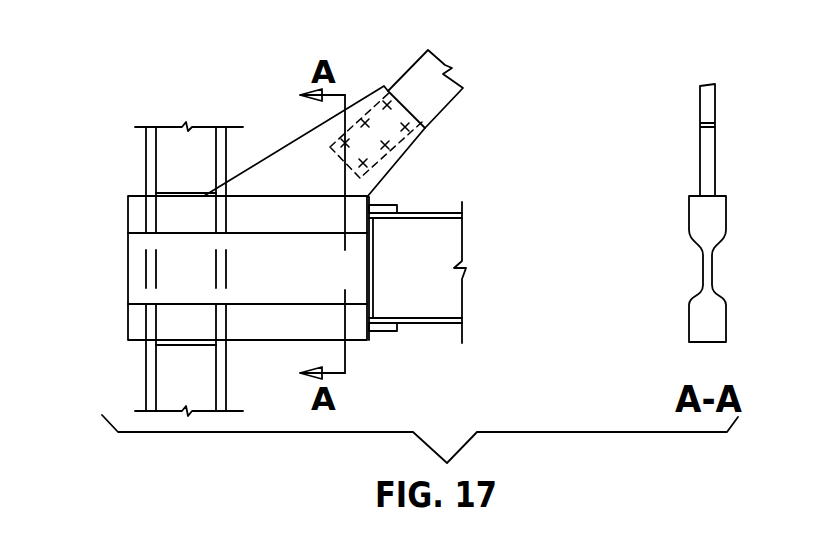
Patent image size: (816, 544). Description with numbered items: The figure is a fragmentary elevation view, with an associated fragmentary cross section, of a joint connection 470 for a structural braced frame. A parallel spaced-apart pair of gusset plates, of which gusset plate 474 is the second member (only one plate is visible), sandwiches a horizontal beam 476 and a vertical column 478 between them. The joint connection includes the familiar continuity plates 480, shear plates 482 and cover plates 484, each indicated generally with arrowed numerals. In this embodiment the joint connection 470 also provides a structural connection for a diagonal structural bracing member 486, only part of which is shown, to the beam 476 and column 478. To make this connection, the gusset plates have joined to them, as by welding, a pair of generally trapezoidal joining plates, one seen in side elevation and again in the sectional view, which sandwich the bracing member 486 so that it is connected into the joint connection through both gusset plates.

The joint connection 470 is at (111, 174).
The gusset plate 474 is at (418, 186).
The beam 476 is at (440, 307).
The column 478 is at (165, 138).
The continuity plates 480 is at (183, 192).
The shear plates 482 is at (373, 277).
The cover plates 484 is at (397, 207).
The diagonal structural bracing member 486 is at (455, 92).